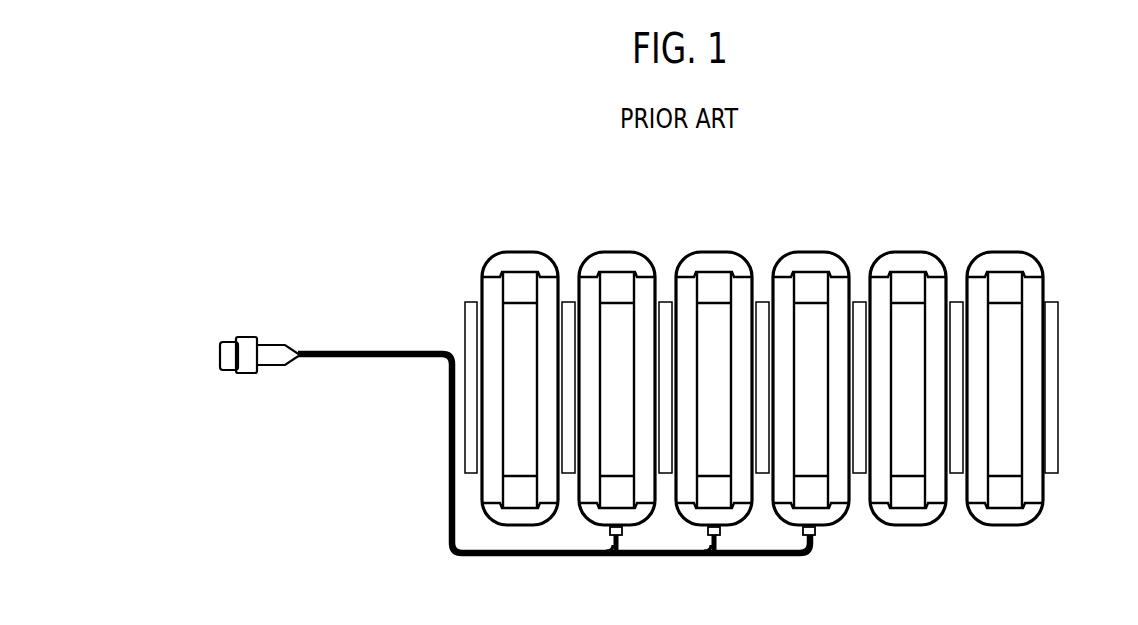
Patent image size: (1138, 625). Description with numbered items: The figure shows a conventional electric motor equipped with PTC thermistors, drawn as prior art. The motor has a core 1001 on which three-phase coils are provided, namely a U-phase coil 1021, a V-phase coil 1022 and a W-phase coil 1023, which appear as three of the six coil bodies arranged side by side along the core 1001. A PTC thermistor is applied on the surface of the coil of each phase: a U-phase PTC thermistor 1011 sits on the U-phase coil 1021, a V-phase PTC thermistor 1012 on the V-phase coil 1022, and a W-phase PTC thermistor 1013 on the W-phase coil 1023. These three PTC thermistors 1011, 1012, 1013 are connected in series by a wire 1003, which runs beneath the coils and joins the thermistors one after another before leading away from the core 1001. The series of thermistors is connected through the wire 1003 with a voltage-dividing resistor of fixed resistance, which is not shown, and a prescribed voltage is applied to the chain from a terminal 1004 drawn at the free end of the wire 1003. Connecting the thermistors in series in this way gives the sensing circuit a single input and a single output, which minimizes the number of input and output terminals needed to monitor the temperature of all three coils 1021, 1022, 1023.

The core 1001 is at (797, 359).
The wire 1003 is at (512, 556).
The terminal 1004 is at (233, 373).
The U-phase PTC thermistor 1011 is at (622, 535).
The V-phase PTC thermistor 1012 is at (720, 535).
The W-phase PTC thermistor 1013 is at (818, 535).
The U-phase coil 1021 is at (603, 263).
The V-phase coil 1022 is at (703, 263).
The W-phase coil 1023 is at (822, 263).